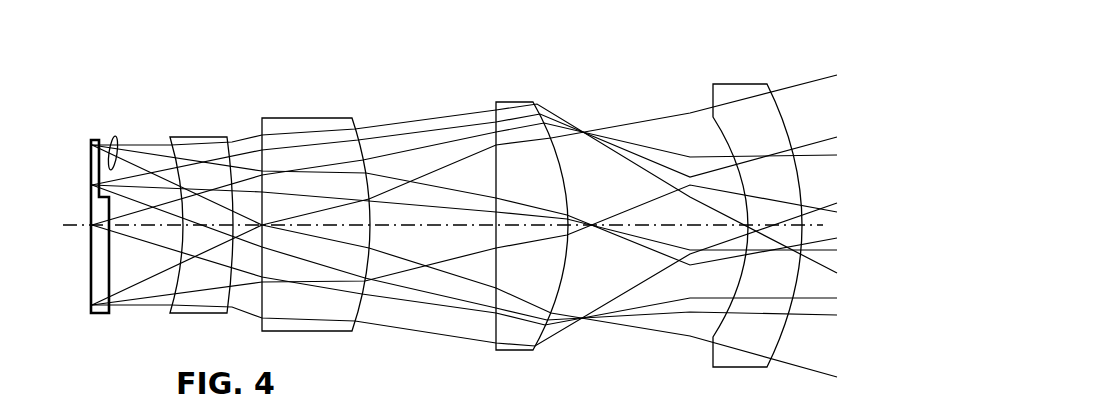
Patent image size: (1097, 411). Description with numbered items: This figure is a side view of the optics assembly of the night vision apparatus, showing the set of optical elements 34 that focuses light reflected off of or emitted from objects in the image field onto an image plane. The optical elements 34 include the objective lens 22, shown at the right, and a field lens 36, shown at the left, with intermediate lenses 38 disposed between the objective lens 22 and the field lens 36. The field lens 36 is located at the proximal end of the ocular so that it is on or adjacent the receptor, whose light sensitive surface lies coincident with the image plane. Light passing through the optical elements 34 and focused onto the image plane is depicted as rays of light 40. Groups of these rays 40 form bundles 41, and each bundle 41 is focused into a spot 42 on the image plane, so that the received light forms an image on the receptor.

The objective lens 22 is at (733, 94).
The optical elements 34 is at (369, 190).
The field lens 36 is at (97, 110).
The intermediate lens 38 is at (190, 152).
The rays of light 40 is at (427, 145).
The bundle 41 is at (114, 136).
The spot 42 is at (65, 171).